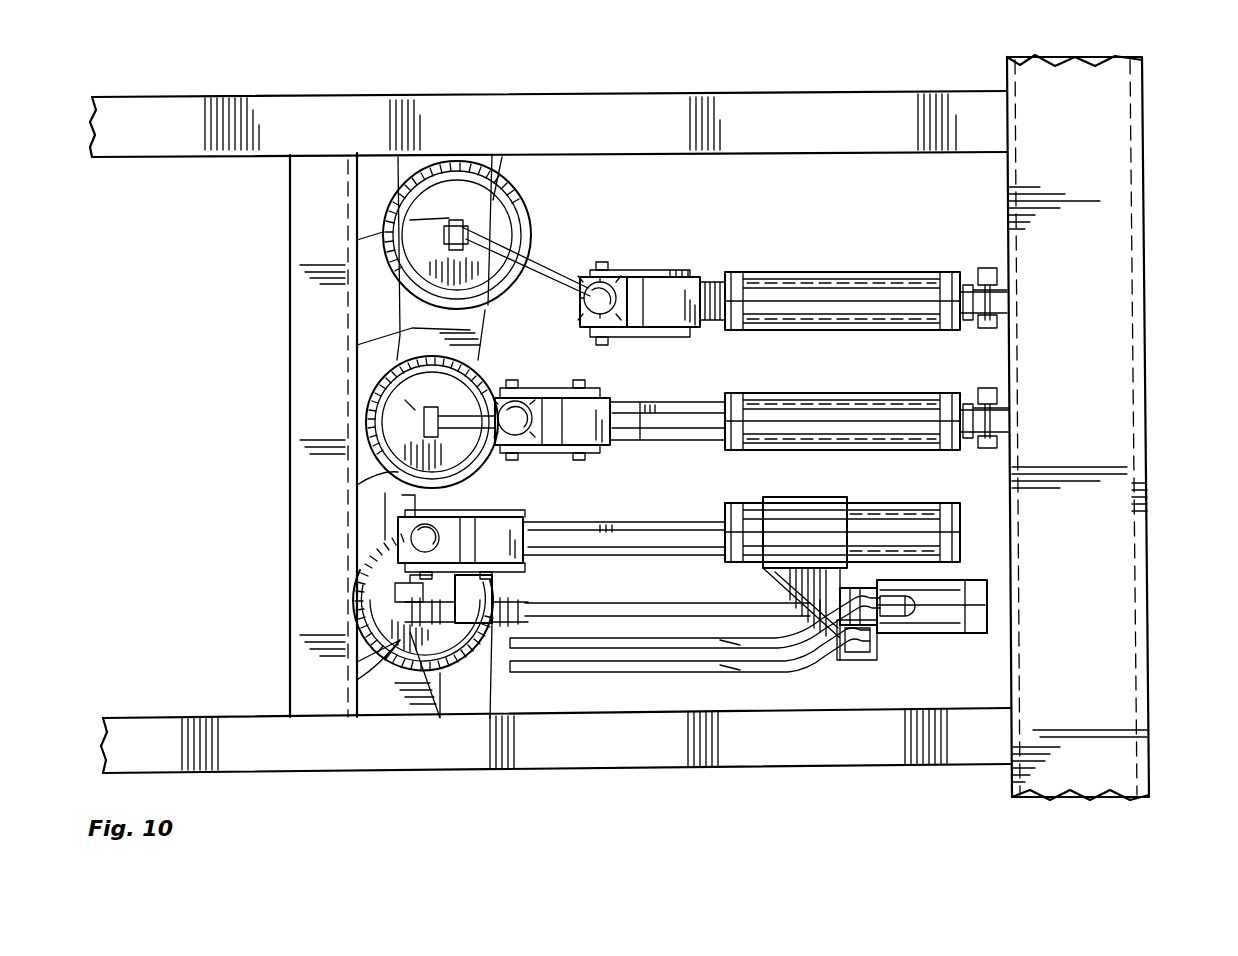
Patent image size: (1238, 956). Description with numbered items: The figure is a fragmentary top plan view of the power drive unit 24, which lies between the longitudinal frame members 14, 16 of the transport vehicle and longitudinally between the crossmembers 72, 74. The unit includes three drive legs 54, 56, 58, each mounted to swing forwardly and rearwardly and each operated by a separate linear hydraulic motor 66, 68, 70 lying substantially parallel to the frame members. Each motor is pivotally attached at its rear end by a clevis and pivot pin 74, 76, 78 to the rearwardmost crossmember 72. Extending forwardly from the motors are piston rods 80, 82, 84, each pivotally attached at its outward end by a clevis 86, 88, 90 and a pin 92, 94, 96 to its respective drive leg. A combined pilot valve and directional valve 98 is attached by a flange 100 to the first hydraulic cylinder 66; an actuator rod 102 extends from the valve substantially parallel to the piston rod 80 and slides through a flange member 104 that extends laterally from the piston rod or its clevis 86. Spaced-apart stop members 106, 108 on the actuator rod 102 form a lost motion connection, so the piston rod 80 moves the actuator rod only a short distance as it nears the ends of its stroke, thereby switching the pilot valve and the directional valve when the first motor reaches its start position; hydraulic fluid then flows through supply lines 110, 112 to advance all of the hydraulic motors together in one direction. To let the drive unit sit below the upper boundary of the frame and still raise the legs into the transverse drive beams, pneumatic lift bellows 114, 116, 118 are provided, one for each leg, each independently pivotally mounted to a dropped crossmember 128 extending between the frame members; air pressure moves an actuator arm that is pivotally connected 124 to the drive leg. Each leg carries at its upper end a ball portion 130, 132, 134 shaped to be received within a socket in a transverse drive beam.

The frame member 14 is at (660, 770).
The frame member 16 is at (778, 100).
The power drive unit 24 is at (735, 216).
The drive leg 54 is at (490, 517).
The drive leg 56 is at (535, 388).
The drive leg 58 is at (582, 280).
The linear hydraulic motor 66 is at (875, 503).
The linear hydraulic motor 68 is at (845, 393).
The linear hydraulic motor 70 is at (815, 272).
The crossmember 72 is at (1120, 540).
The crossmember 74 is at (313, 393).
The clevis and pivot pin 76 is at (990, 388).
The clevis and pivot pin 78 is at (985, 268).
The piston rod 80 is at (655, 522).
The piston rod 82 is at (695, 400).
The piston rod 84 is at (715, 282).
The clevis 86 is at (505, 572).
The clevis 88 is at (580, 460).
The clevis 90 is at (665, 270).
The pin 92 is at (610, 345).
The pin 94 is at (512, 380).
The pin 96 is at (395, 490).
The combined pilot valve and directional valve 98 is at (932, 628).
The flange 100 is at (775, 568).
The actuator rod 102 is at (625, 608).
The flange member 104 is at (465, 630).
The stop member 106 is at (356, 680).
The stop member 108 is at (530, 656).
The supply line 110 is at (812, 655).
The supply line 112 is at (735, 645).
The pneumatic lift bellows 114 is at (365, 612).
The pneumatic lift bellows 116 is at (356, 418).
The pneumatic lift bellows 118 is at (510, 222).
The pivotal connection 124 is at (353, 240).
The dropped crossmember 128 is at (352, 343).
The ball portion 130 is at (355, 566).
The ball portion 132 is at (570, 388).
The ball portion 134 is at (605, 290).